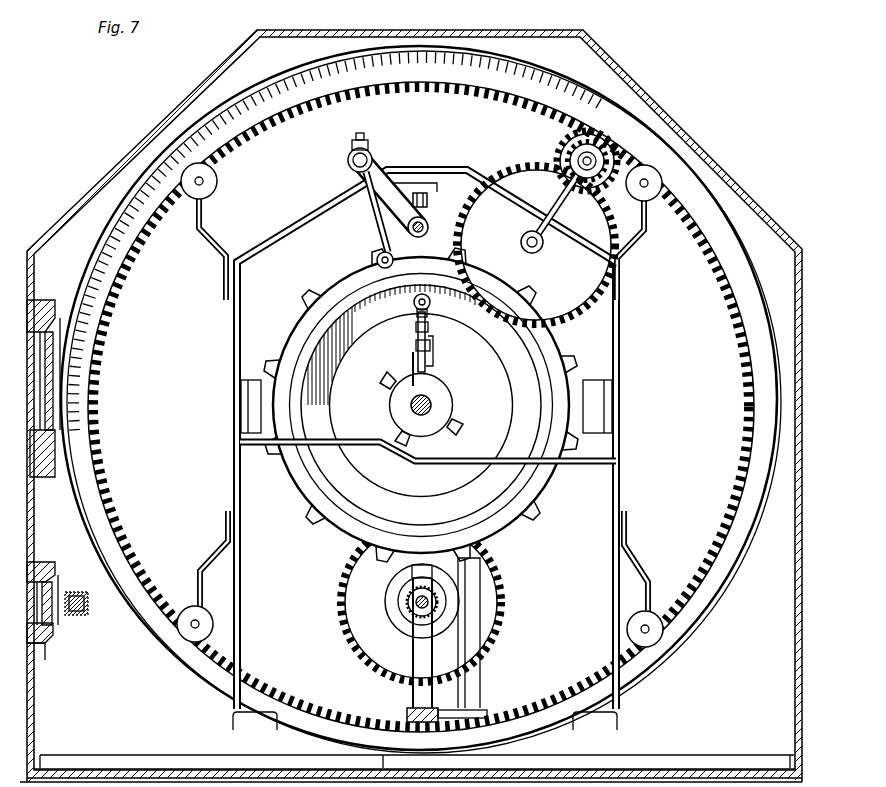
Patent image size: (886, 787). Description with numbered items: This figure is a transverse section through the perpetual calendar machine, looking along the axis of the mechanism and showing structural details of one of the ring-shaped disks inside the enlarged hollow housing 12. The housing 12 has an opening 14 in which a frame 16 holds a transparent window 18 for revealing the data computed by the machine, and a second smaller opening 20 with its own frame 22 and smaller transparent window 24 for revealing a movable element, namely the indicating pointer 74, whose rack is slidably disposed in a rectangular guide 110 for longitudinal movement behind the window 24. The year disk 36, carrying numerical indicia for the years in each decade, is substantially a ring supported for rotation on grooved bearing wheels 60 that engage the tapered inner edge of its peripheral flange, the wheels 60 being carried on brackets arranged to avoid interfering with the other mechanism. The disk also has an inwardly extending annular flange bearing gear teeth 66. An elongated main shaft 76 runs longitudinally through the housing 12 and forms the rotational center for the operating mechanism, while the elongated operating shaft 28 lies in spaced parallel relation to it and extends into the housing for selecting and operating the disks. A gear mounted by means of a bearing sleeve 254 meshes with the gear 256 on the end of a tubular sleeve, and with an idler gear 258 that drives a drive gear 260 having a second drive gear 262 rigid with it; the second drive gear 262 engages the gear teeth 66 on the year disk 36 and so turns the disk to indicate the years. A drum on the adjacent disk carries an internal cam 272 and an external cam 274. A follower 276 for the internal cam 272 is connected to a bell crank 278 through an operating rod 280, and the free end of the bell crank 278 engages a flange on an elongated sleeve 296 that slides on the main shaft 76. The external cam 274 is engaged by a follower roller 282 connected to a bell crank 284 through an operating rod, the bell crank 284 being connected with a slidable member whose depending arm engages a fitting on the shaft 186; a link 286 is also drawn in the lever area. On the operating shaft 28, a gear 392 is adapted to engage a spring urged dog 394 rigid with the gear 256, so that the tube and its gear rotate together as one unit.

The housing 12 is at (289, 326).
The opening 14 is at (43, 298).
The frame 16 is at (56, 307).
The transparent window 18 is at (48, 380).
The second opening 20 is at (47, 648).
The frame 22 is at (45, 565).
The transparent window 24 is at (55, 626).
The operating shaft 28 is at (428, 612).
The year disk 36 is at (555, 82).
The bearing wheels 60 is at (212, 185).
The gear teeth 66 is at (468, 92).
The indicating pointer 74 is at (62, 600).
The main shaft 76 is at (440, 404).
The rectangular guide 110 is at (86, 612).
The shaft 186 is at (438, 220).
The bearing sleeve 254 is at (440, 424).
The gear 256 is at (482, 635).
The idler gear 258 is at (594, 241).
The drive gear 260 is at (566, 156).
The second drive gear 262 is at (560, 138).
The internal cam 272 is at (405, 292).
The external cam 274 is at (346, 290).
The follower 276 is at (433, 304).
The bell crank 278 is at (395, 378).
The operating rod 280 is at (418, 347).
The follower roller 282 is at (394, 261).
The bell crank 284 is at (362, 176).
The link 286 is at (378, 242).
The elongated sleeve 296 is at (412, 405).
The gear 392 is at (415, 603).
The spring urged dog 394 is at (410, 590).